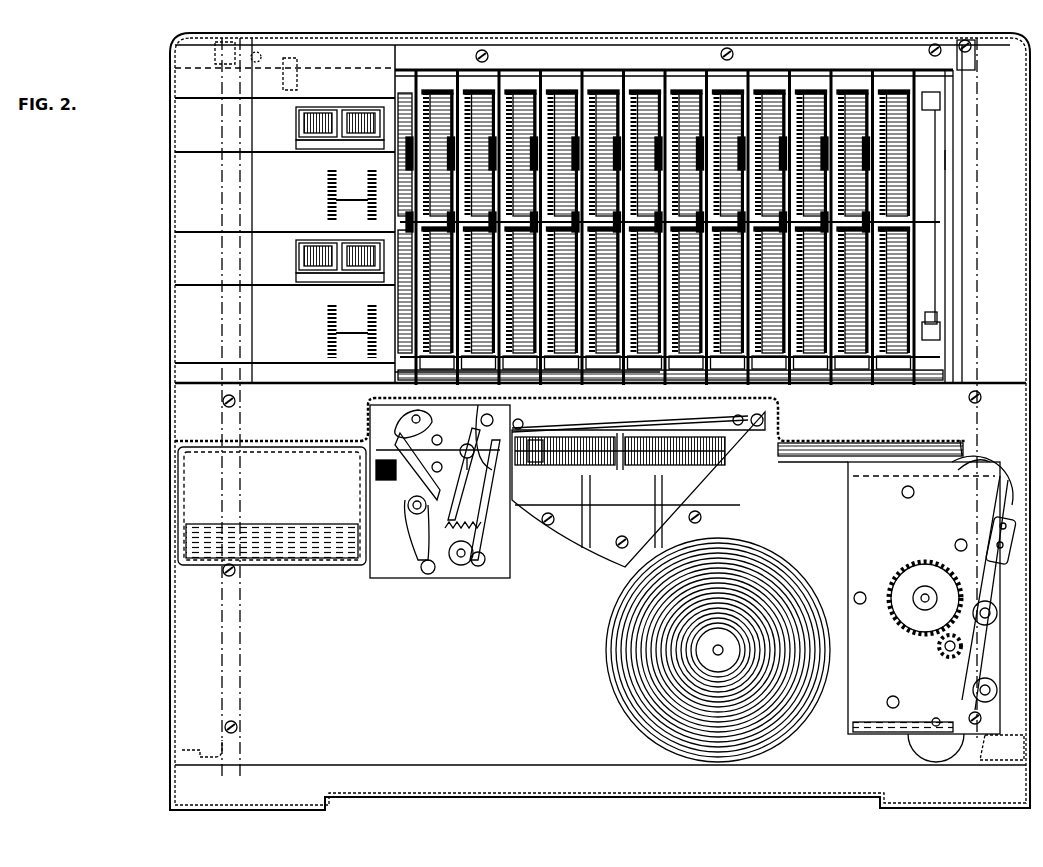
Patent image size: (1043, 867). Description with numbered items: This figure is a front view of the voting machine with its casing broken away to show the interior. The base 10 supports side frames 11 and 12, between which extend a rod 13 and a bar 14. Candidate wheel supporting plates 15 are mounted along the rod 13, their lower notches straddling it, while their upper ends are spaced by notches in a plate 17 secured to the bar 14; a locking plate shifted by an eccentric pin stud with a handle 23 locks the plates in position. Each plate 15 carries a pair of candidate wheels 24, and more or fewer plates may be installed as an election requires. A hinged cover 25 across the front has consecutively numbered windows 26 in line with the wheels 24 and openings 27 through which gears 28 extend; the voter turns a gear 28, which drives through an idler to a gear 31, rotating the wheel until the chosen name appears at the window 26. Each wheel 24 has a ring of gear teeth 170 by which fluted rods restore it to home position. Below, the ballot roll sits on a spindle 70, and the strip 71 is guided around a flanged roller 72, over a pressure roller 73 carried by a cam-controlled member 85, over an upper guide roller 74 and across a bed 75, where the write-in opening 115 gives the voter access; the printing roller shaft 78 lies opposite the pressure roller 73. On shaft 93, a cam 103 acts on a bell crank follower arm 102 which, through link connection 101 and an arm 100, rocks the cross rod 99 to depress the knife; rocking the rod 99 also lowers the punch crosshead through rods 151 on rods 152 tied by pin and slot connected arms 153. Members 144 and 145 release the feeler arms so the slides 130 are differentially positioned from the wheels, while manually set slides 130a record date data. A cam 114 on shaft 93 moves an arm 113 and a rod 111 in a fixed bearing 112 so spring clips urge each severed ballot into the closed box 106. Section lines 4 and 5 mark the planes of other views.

The base 10 is at (388, 768).
The side frame 11 is at (222, 216).
The side frame 12 is at (965, 188).
The rod 13 is at (642, 372).
The bar 14 is at (237, 47).
The candidate wheel supporting plates 15 is at (462, 86).
The plate 17 is at (746, 56).
The handle 23 is at (290, 58).
The candidate wheels 24 is at (600, 122).
The hinged cover 25 is at (278, 195).
The windows 26 is at (358, 112).
The openings 27 is at (368, 190).
The gears 28 is at (980, 352).
The gear 31 is at (912, 128).
The spindle 70 is at (716, 654).
The strip 71 is at (770, 766).
The flanged roller 72 is at (933, 740).
The pressure roller 73 is at (990, 620).
The upper guide roller 74 is at (968, 470).
The bed 75 is at (908, 456).
The shaft 78 is at (920, 604).
The member 85 is at (996, 588).
The shaft 93 is at (466, 560).
The cross rod 99 is at (421, 419).
The arm 100 is at (368, 428).
The link connection 101 is at (445, 480).
The bell crank follower arm 102 is at (422, 533).
The cam 103 is at (437, 571).
The box 106 is at (268, 556).
The rod 111 is at (450, 456).
The fixed bearing 112 is at (471, 464).
The arm 113 is at (492, 500).
The cam 114 is at (462, 575).
The opening 115 is at (816, 445).
The slides 130 is at (700, 448).
The slides 130a is at (565, 452).
The member 144 is at (946, 318).
The member 145 is at (946, 152).
The rod 151 is at (518, 418).
The rods 152 is at (487, 414).
The pin and slot connected arms 153 is at (650, 418).
The ring of gear teeth 170 is at (720, 92).
The section line 4- 4 is at (655, 20).
The section line 5- 5 is at (142, 395).